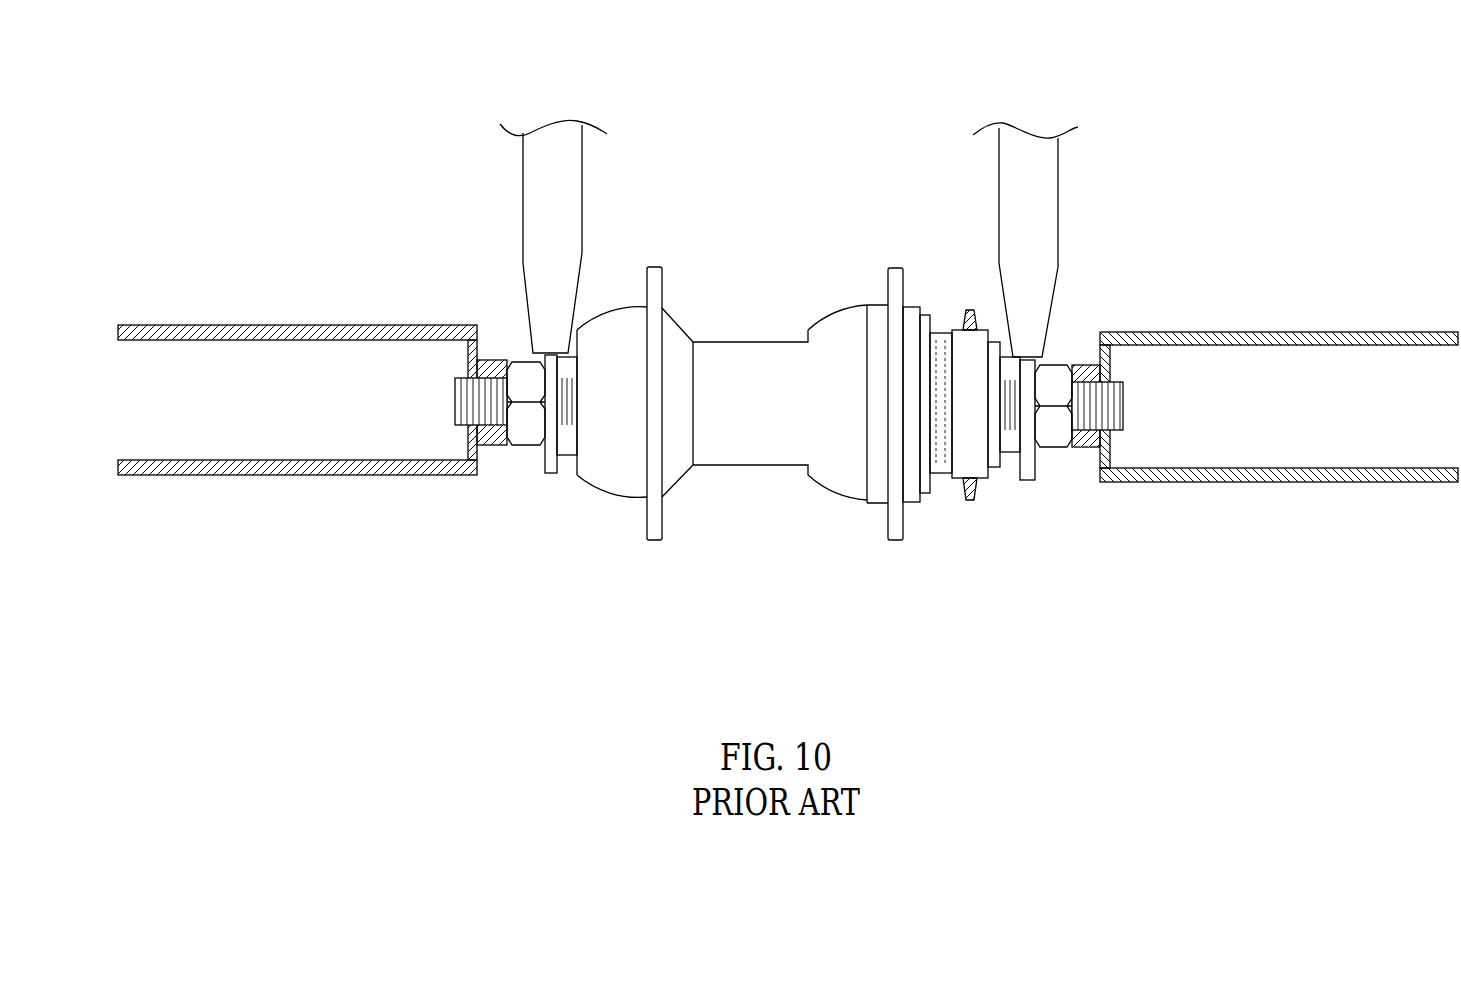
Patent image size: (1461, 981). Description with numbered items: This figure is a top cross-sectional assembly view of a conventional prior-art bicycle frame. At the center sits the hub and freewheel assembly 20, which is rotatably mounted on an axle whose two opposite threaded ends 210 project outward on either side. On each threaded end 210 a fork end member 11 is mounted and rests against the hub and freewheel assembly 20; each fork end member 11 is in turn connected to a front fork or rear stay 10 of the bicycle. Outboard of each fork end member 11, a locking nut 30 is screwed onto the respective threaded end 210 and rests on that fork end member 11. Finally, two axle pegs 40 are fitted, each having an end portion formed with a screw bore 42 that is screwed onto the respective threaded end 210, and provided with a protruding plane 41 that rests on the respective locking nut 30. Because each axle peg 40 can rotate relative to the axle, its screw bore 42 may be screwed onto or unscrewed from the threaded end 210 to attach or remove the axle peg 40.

The front fork or rear stay 10 is at (518, 183).
The fork end member 11 is at (552, 476).
The hub and freewheel assembly 20 is at (765, 342).
The threaded end 210 is at (462, 403).
The locking nut 30 is at (526, 442).
The axle peg 40 is at (285, 482).
The protruding plane 41 is at (500, 440).
The screw bore 42 is at (490, 362).